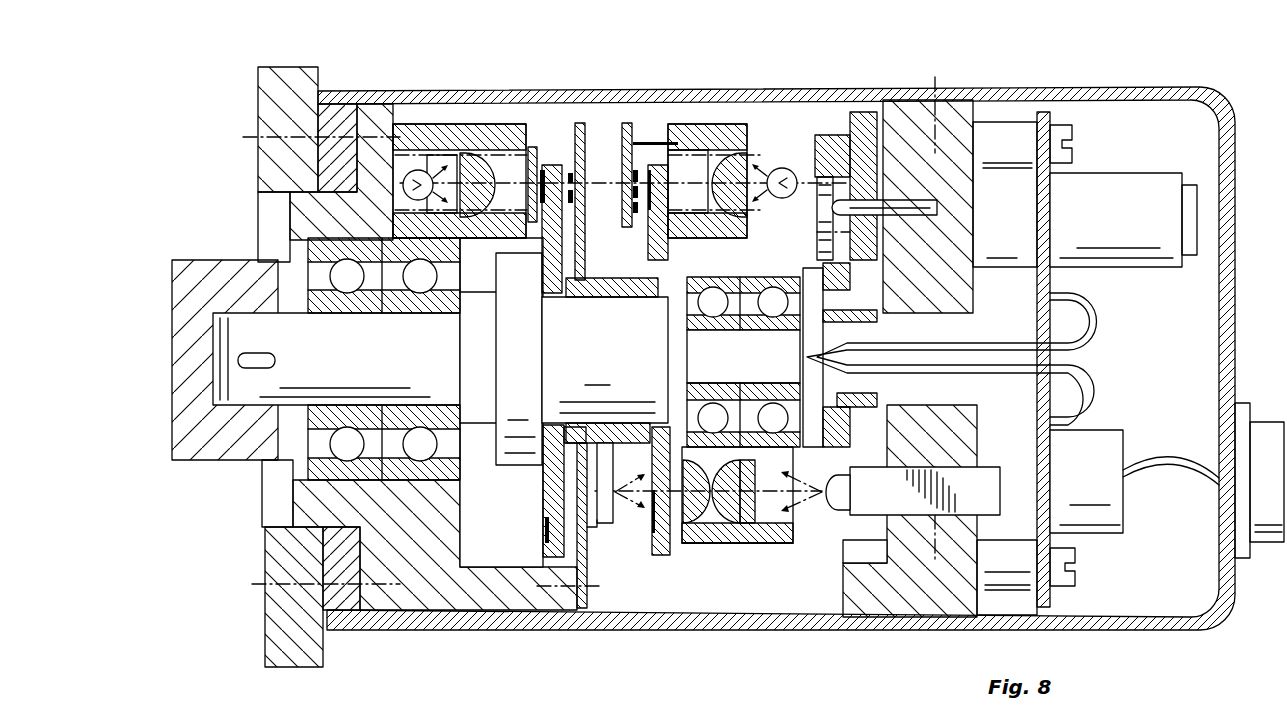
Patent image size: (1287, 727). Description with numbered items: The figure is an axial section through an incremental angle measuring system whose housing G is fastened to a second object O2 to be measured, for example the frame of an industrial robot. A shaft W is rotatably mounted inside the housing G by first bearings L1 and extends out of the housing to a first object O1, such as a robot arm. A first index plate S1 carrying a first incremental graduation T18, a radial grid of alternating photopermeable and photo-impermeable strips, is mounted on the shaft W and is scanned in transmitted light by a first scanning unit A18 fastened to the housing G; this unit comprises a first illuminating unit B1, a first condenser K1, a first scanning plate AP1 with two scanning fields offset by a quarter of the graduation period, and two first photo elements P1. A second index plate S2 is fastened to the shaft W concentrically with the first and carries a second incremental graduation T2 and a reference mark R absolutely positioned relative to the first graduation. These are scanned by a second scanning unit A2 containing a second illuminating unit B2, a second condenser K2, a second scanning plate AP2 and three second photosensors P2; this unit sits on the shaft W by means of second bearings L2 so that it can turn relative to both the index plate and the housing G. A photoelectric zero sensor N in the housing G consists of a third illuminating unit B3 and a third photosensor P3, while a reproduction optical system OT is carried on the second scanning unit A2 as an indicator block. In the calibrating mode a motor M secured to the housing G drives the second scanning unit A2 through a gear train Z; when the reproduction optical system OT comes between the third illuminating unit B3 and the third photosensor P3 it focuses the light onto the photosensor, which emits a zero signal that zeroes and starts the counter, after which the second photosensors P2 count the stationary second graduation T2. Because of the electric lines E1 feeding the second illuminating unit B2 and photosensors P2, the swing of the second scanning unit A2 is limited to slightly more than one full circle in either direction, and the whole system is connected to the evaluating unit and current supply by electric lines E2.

The first scanning unit A18 is at (490, 112).
The first incremental graduation T18 is at (546, 168).
The second scanning unit A2 is at (708, 112).
The first illuminating unit B1 is at (418, 170).
The first condenser K1 is at (480, 163).
The first scanning plate AP1 is at (532, 147).
The first photo elements P1 is at (568, 173).
The second photosensors P2 is at (637, 170).
The second scanning plate AP2 is at (676, 144).
The second condenser K2 is at (732, 155).
The second illuminating unit B2 is at (782, 168).
The gear train Z is at (836, 120).
The motor M is at (1108, 188).
The shaft W is at (235, 350).
The first bearings L1 is at (360, 312).
The second bearings L2 is at (714, 410).
The third photosensor P3 is at (610, 467).
The electric lines E1 is at (1012, 368).
The electric lines E2 is at (1170, 460).
The first object O1 is at (200, 460).
The housing G is at (310, 503).
The second object O2 is at (273, 617).
The first index plate S1 is at (557, 557).
The reference mark R is at (650, 512).
The second incremental graduation T2 is at (645, 518).
The second index plate S2 is at (662, 555).
The reproduction optical system OT is at (742, 525).
The photoelectric zero sensor N is at (777, 553).
The third illuminating unit B3 is at (840, 503).